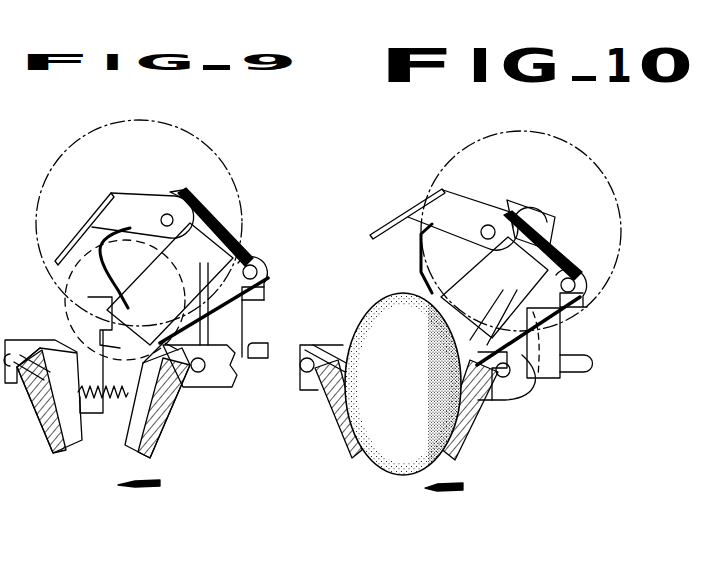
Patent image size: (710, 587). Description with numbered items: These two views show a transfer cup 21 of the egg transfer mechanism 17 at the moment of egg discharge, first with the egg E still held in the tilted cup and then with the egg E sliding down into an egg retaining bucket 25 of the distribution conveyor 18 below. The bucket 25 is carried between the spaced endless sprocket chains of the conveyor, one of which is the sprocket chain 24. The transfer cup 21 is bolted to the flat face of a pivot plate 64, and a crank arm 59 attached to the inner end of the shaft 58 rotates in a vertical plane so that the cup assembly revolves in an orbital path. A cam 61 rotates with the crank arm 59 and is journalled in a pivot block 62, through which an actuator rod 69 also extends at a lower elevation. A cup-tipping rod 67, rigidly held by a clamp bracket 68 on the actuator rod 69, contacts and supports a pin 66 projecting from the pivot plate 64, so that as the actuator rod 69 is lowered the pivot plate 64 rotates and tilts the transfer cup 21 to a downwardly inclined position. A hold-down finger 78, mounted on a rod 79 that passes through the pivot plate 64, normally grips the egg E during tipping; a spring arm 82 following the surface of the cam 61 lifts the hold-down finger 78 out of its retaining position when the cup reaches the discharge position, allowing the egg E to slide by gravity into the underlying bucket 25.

In FIG. 9, the egg transfer mechanism 17 is at (206, 203).
In FIG. 10, the egg transfer mechanism 17 is at (561, 202).
In FIG. 9, the distribution conveyor 18 is at (213, 388).
In FIG. 10, the distribution conveyor 18 is at (300, 387).
In FIG. 9, the transfer cup 21 is at (102, 382).
In FIG. 10, the transfer cup 21 is at (493, 393).
In FIG. 9, the sprocket chain 24 is at (28, 339).
In FIG. 10, the sprocket chain 24 is at (320, 347).
In FIG. 9, the egg retaining bucket 25 is at (58, 456).
In FIG. 10, the egg retaining bucket 25 is at (458, 454).
In FIG. 10, the shaft 58 is at (530, 212).
In FIG. 10, the crank arm 59 is at (552, 218).
In FIG. 9, the cam 61 is at (168, 286).
In FIG. 10, the cam 61 is at (449, 289).
In FIG. 10, the pivot block 62 is at (530, 396).
In FIG. 9, the pivot plate 64 is at (226, 243).
In FIG. 10, the pivot plate 64 is at (548, 255).
In FIG. 9, the pin 66 is at (255, 267).
In FIG. 10, the pin 66 is at (574, 276).
In FIG. 9, the cup-tipping rod 67 is at (265, 287).
In FIG. 10, the cup-tipping rod 67 is at (588, 305).
In FIG. 9, the clamp bracket 68 is at (243, 309).
In FIG. 10, the clamp bracket 68 is at (562, 327).
In FIG. 9, the actuator rod 69 is at (258, 345).
In FIG. 10, the actuator rod 69 is at (584, 372).
In FIG. 9, the hold-down finger 78 is at (93, 214).
In FIG. 10, the hold-down finger 78 is at (392, 225).
In FIG. 9, the rod 79 is at (178, 198).
In FIG. 10, the rod 79 is at (495, 210).
In FIG. 9, the spring arm 82 is at (116, 276).
In FIG. 10, the spring arm 82 is at (417, 262).
In FIG. 9, the egg E is at (56, 268).
In FIG. 10, the egg E is at (389, 472).